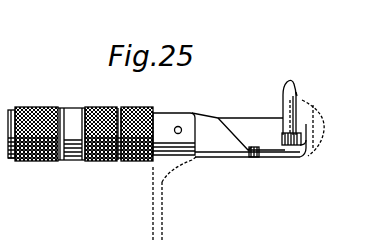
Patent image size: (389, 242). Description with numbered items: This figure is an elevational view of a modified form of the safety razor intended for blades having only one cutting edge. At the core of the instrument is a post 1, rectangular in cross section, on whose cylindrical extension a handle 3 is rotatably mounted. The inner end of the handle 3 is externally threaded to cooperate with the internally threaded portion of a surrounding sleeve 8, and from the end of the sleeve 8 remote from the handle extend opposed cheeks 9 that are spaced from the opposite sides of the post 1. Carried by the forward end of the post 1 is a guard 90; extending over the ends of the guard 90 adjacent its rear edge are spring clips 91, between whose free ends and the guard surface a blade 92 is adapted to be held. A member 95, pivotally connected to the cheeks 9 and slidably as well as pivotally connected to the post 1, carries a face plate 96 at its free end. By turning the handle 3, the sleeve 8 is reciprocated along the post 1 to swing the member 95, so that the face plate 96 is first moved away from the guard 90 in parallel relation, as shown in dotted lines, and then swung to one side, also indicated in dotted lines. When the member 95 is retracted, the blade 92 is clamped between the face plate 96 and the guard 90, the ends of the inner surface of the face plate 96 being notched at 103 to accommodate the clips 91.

The post 1 is at (241, 116).
The handle 3 is at (34, 107).
The sleeve 8 is at (98, 162).
The cheeks 9 is at (171, 113).
The guard 90 is at (290, 79).
The spring clips 91 is at (290, 135).
The blade 92 is at (297, 97).
The member 95 is at (228, 147).
The face plate 96 is at (302, 117).
The notches 103 is at (304, 139).